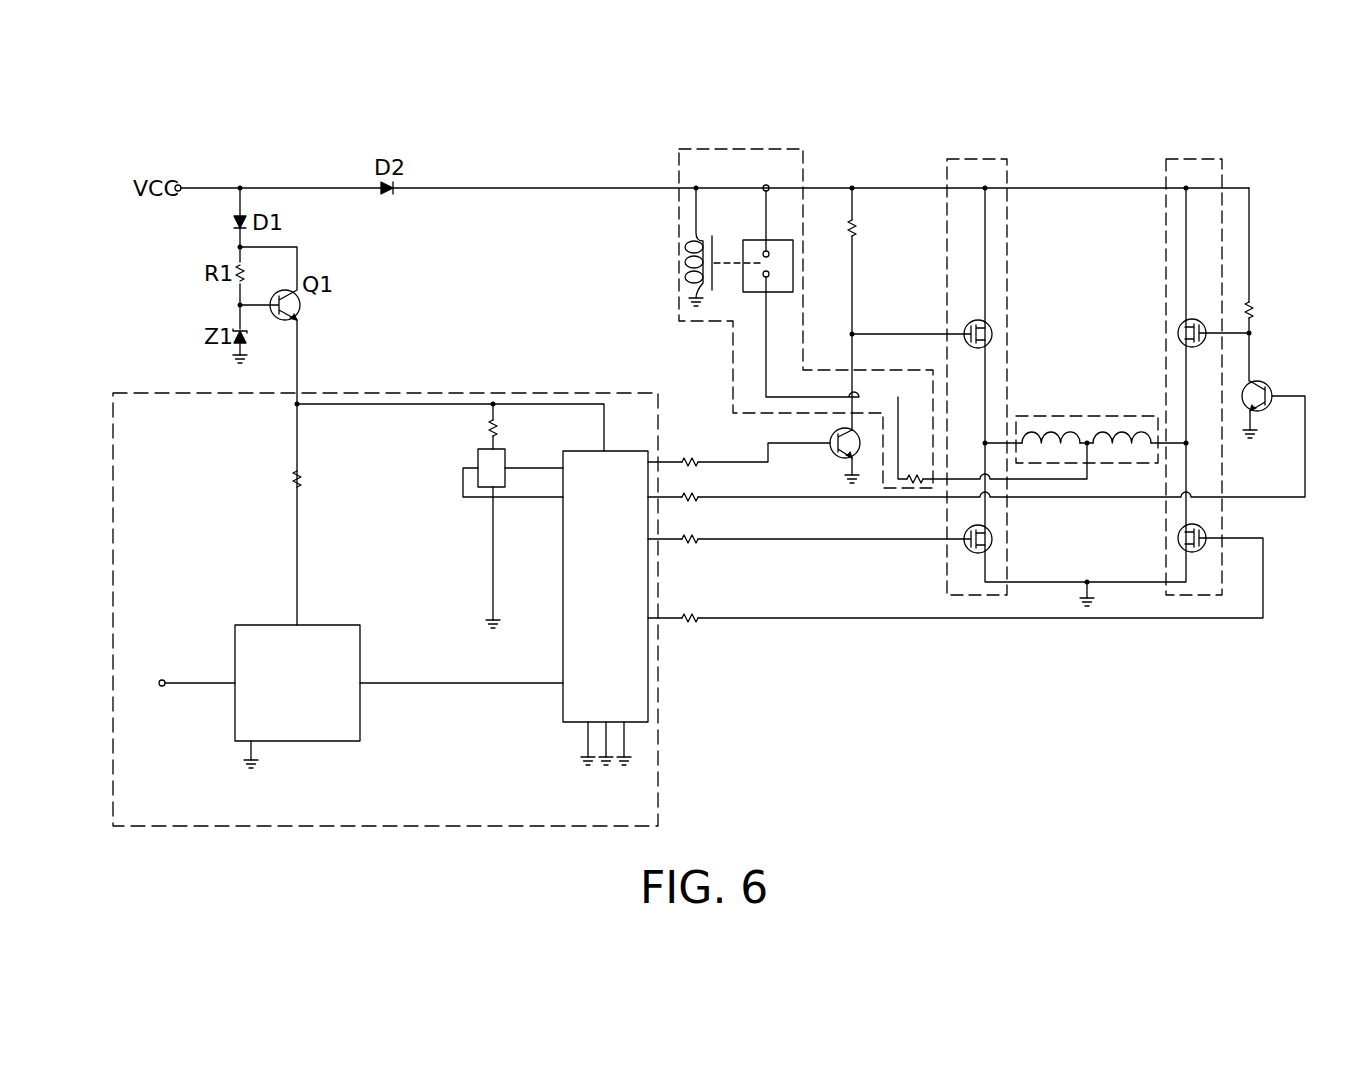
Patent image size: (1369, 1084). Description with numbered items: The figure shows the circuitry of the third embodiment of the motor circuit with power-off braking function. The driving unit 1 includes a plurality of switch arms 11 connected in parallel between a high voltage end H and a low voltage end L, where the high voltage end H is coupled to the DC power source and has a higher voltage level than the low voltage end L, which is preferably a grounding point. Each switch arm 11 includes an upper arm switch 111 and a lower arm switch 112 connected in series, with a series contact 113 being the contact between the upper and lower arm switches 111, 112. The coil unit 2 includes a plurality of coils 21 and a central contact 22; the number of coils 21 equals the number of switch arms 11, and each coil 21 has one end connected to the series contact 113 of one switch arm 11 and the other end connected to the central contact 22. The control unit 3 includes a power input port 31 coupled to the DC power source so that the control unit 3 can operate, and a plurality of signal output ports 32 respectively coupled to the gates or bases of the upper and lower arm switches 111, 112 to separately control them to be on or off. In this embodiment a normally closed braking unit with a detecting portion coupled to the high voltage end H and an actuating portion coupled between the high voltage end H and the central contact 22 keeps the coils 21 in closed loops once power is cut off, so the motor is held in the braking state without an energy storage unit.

The driving unit 1 is at (1113, 444).
The switch arm 11 is at (1113, 419).
The upper arm switch 111 is at (966, 322).
The lower arm switch 112 is at (995, 534).
The series contact 113 is at (1188, 446).
The coil unit 2 is at (1085, 394).
The coil 21 is at (1130, 414).
The central contact 22 is at (1087, 414).
The control unit 3 is at (385, 634).
The power input port 31 is at (300, 407).
The signal output port 32 is at (650, 462).
The high voltage end H is at (985, 188).
The low voltage end L is at (1087, 584).